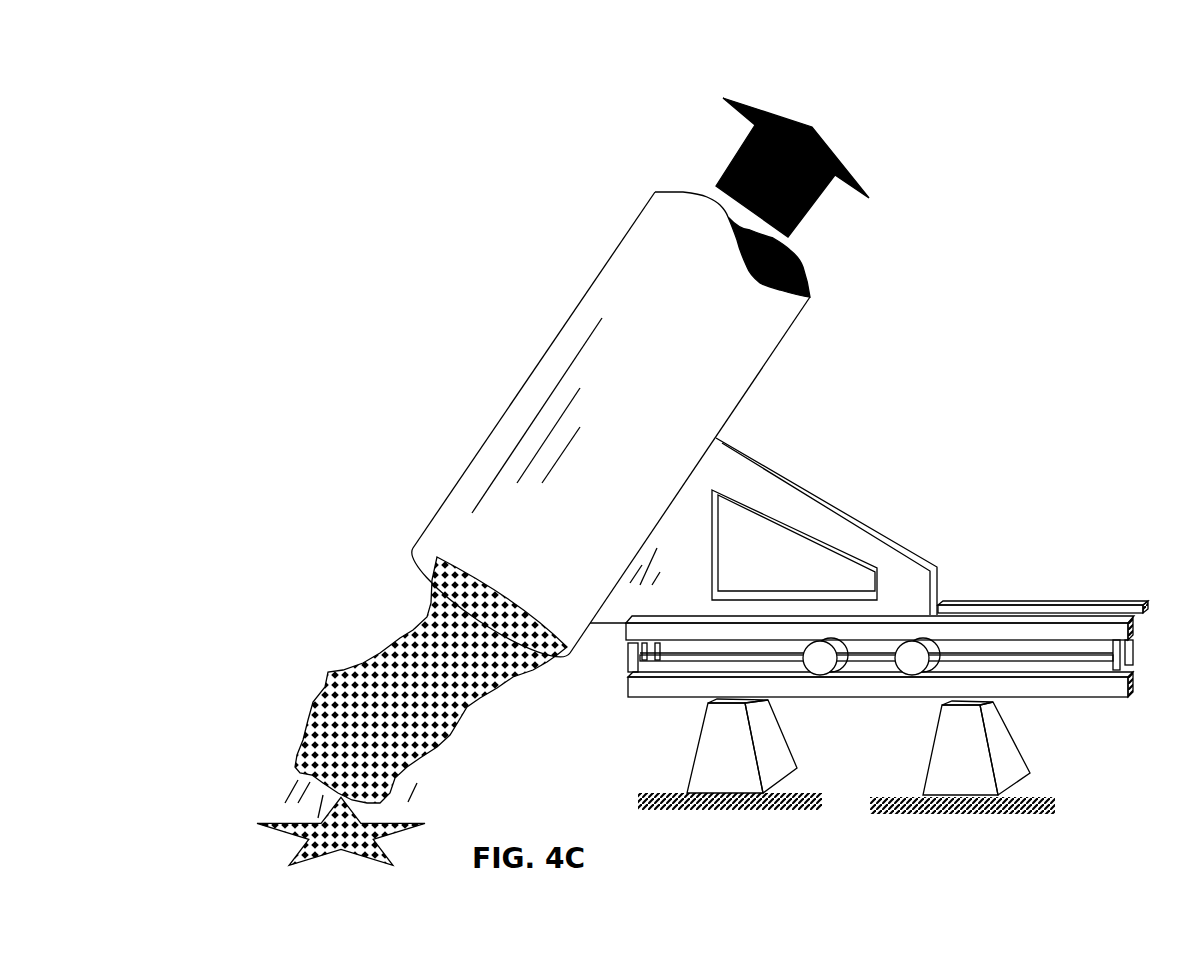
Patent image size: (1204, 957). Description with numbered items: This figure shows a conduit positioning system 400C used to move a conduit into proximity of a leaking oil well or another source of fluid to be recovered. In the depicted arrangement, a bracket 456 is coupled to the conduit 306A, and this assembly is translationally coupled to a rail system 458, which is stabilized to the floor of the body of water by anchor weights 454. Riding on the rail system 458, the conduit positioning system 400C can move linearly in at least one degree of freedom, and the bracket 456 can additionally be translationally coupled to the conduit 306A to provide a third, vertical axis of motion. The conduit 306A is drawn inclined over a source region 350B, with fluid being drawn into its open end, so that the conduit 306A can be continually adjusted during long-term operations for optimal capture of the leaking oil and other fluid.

The conduit positioning system 400C is at (973, 46).
The conduit 306A is at (633, 242).
The impact zone 350B is at (258, 818).
The anchor weights 454 is at (737, 780).
The bracket 456 is at (692, 600).
The rail system 458 is at (987, 605).